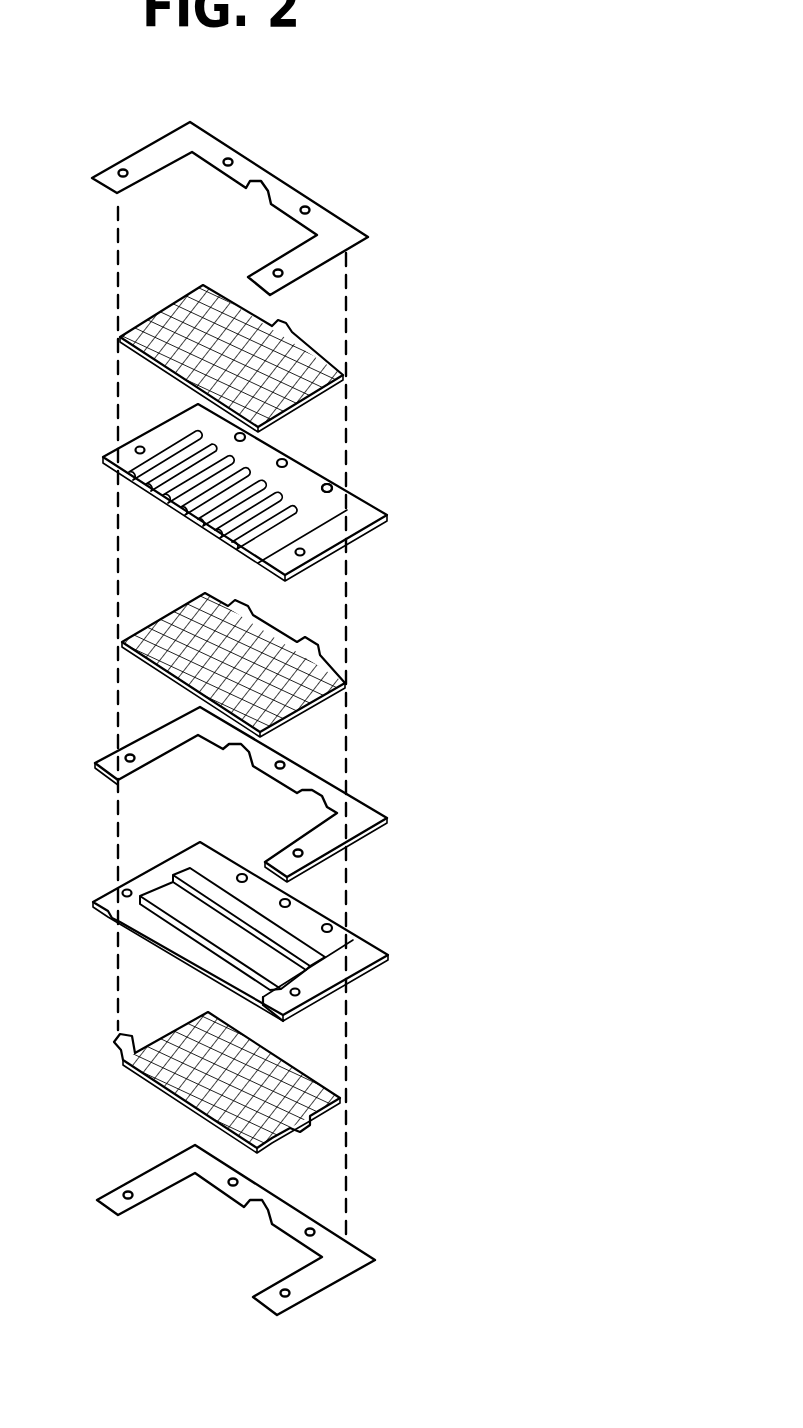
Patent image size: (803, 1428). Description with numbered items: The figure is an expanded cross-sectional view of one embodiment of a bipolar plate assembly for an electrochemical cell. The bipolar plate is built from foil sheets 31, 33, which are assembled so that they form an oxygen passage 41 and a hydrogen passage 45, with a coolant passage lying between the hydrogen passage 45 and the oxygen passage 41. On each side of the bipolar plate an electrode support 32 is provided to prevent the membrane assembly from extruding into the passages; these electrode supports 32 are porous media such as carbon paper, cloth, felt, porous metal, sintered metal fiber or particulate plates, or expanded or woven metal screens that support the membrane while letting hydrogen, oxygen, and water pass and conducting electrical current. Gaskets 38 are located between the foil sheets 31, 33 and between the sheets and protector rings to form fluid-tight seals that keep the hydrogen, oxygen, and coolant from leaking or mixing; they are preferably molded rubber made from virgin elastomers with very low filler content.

The foil sheet 31 is at (245, 473).
The electrode support 32 is at (283, 410).
The foil sheet 33 is at (243, 910).
The gasket 38 is at (293, 188).
The oxygen passage 41 is at (347, 488).
The hydrogen passage 45 is at (280, 1013).